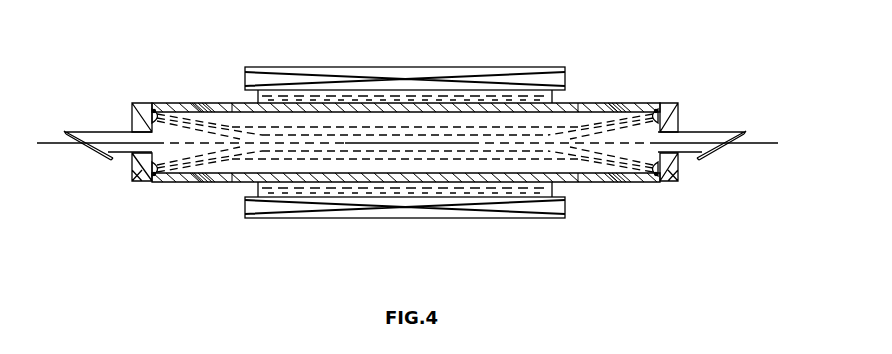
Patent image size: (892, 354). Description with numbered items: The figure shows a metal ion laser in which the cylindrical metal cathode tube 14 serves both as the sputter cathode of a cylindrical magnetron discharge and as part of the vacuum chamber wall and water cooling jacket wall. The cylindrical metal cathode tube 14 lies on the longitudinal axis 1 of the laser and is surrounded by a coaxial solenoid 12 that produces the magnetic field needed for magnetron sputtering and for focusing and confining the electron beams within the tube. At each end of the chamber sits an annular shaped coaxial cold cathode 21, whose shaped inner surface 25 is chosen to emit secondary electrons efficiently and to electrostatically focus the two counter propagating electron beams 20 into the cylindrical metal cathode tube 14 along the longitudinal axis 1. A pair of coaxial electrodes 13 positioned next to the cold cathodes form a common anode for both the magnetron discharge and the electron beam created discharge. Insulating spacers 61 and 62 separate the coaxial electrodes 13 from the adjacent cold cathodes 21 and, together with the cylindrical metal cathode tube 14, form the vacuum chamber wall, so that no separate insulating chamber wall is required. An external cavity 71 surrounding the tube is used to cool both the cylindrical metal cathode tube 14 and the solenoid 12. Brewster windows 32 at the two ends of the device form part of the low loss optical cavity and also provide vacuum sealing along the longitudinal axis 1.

The longitudinal axis 1 is at (743, 145).
The coaxial solenoid 12 is at (550, 77).
The coaxial electrodes 13 is at (197, 182).
The cylindrical metal cathode tube 14 is at (257, 198).
The counter propagating electron beams 20 is at (190, 113).
The annular shaped coaxial cold cathodes 21 is at (133, 182).
The inner surface 25 is at (155, 110).
The Brewster windows 32 is at (95, 156).
The insulating spacer 61 is at (163, 182).
The insulating spacer 62 is at (233, 180).
The external cavity 71 is at (273, 96).